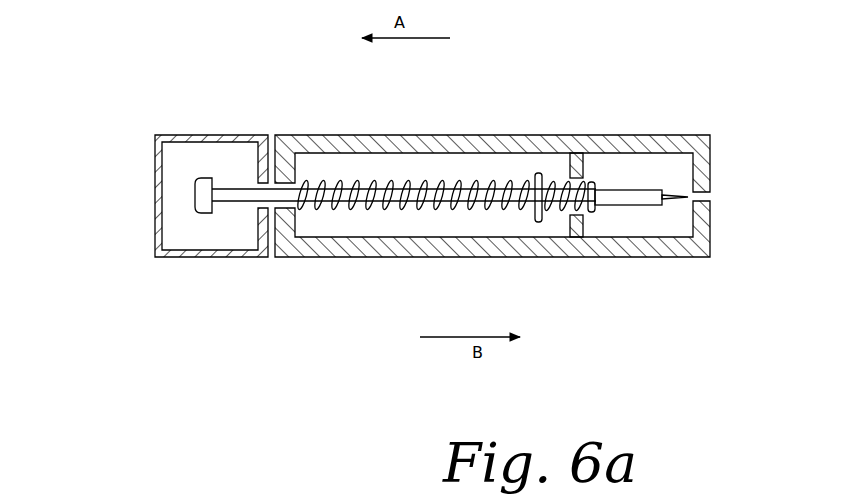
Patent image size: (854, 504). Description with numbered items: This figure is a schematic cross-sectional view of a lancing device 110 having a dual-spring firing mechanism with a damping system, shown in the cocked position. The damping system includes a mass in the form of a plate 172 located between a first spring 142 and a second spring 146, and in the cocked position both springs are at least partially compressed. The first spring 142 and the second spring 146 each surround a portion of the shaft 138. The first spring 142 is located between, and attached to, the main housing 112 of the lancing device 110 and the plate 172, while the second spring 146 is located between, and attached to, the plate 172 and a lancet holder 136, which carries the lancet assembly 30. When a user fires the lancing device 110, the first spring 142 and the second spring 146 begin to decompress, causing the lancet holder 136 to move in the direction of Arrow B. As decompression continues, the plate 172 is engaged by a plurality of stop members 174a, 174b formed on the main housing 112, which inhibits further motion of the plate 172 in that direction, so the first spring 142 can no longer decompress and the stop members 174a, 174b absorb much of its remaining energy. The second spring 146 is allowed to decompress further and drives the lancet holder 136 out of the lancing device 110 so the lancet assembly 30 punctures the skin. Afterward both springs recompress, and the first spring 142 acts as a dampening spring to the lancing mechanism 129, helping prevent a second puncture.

The lancing device 110 is at (146, 85).
The main housing 112 is at (345, 257).
The shaft 138 is at (313, 186).
The lancing mechanism 129 is at (383, 171).
The first spring 142 is at (428, 181).
The plate 172 is at (537, 172).
The second spring 146 is at (558, 214).
The stop member 174a is at (577, 160).
The stop member 174b is at (577, 236).
The lancet holder 136 is at (624, 190).
The lancet assembly 30 is at (673, 180).